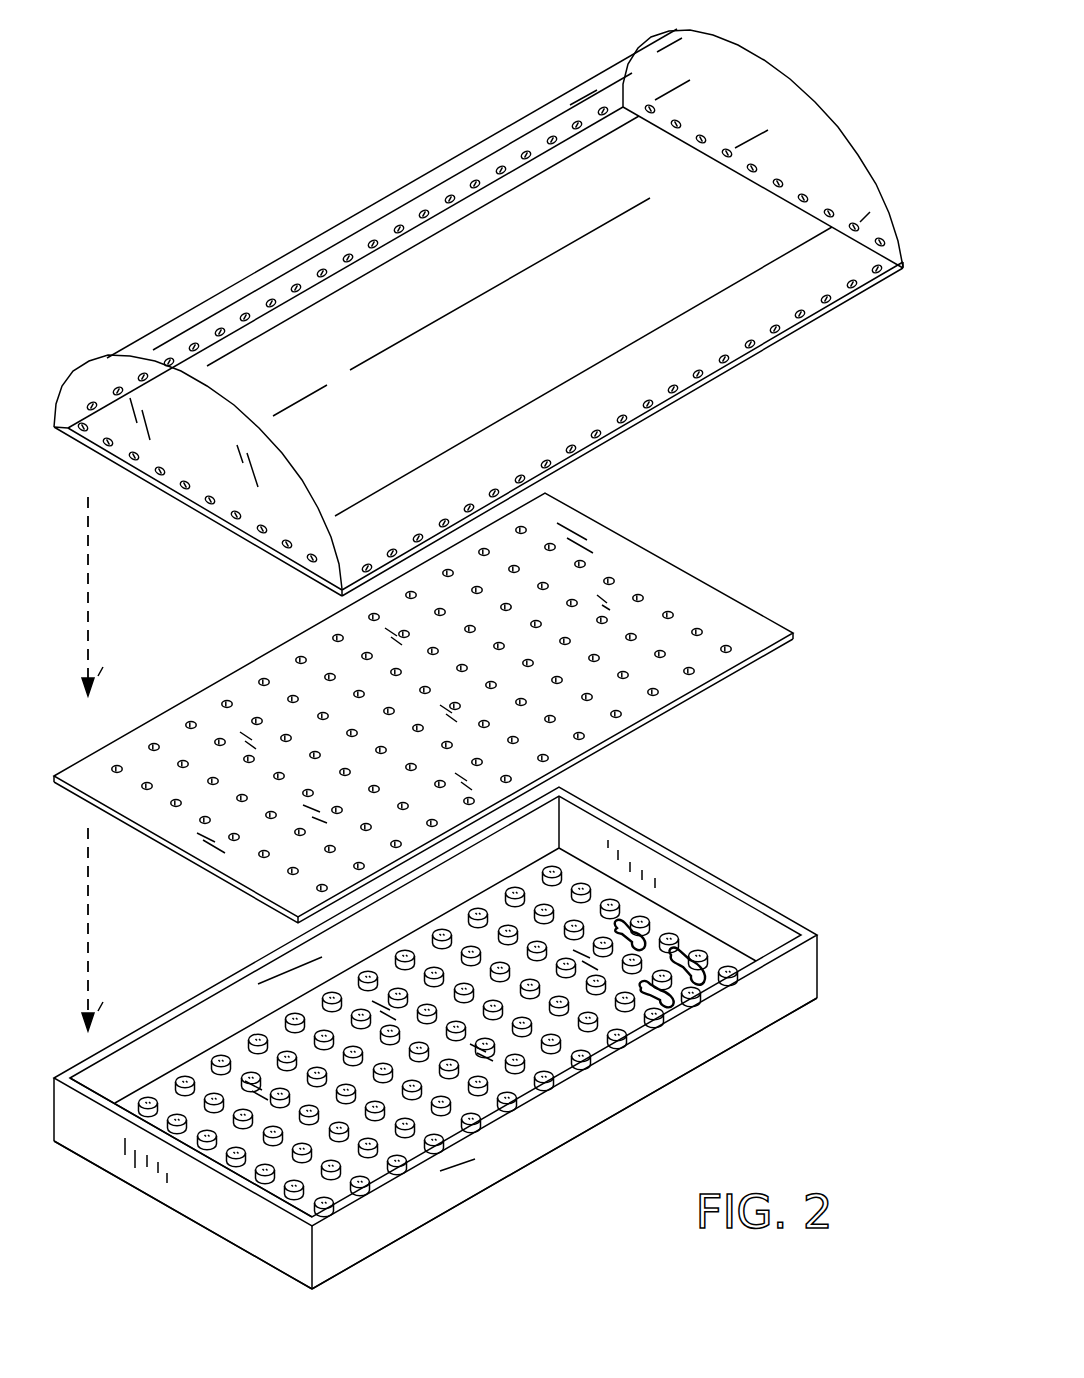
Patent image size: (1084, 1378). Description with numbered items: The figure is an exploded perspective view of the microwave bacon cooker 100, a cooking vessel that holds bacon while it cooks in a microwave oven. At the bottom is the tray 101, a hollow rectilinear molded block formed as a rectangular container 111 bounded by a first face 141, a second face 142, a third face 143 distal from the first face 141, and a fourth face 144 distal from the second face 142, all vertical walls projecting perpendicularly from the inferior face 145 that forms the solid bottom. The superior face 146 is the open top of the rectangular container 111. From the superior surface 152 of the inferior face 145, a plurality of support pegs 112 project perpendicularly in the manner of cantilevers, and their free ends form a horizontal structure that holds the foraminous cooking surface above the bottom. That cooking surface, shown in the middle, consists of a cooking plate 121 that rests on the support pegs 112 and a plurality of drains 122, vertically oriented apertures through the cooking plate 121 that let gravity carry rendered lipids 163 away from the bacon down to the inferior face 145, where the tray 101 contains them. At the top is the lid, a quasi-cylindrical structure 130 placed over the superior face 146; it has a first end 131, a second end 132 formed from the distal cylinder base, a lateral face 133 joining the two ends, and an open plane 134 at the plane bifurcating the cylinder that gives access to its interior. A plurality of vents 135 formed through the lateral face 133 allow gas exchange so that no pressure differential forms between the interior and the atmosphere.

The microwave bacon cooker 100 is at (228, 103).
The tray 101 is at (798, 931).
The rectangular container 111 is at (655, 1095).
The support pegs 112 is at (698, 946).
The cooking plate 121 is at (729, 616).
The drains 122 is at (643, 596).
The quasi-cylindrical structure 130 is at (508, 216).
The first end 131 is at (138, 403).
The second end 132 is at (829, 147).
The lateral face 133 is at (308, 237).
The open plane 134 is at (717, 374).
The vents 135 is at (826, 290).
The first face 141 is at (201, 994).
The second face 142 is at (645, 836).
The third face 143 is at (480, 1167).
The fourth face 144 is at (274, 1244).
The inferior face 145 is at (156, 1216).
The superior face 146 is at (169, 1042).
The superior surface 152 is at (574, 878).
The lipids 163 is at (640, 945).